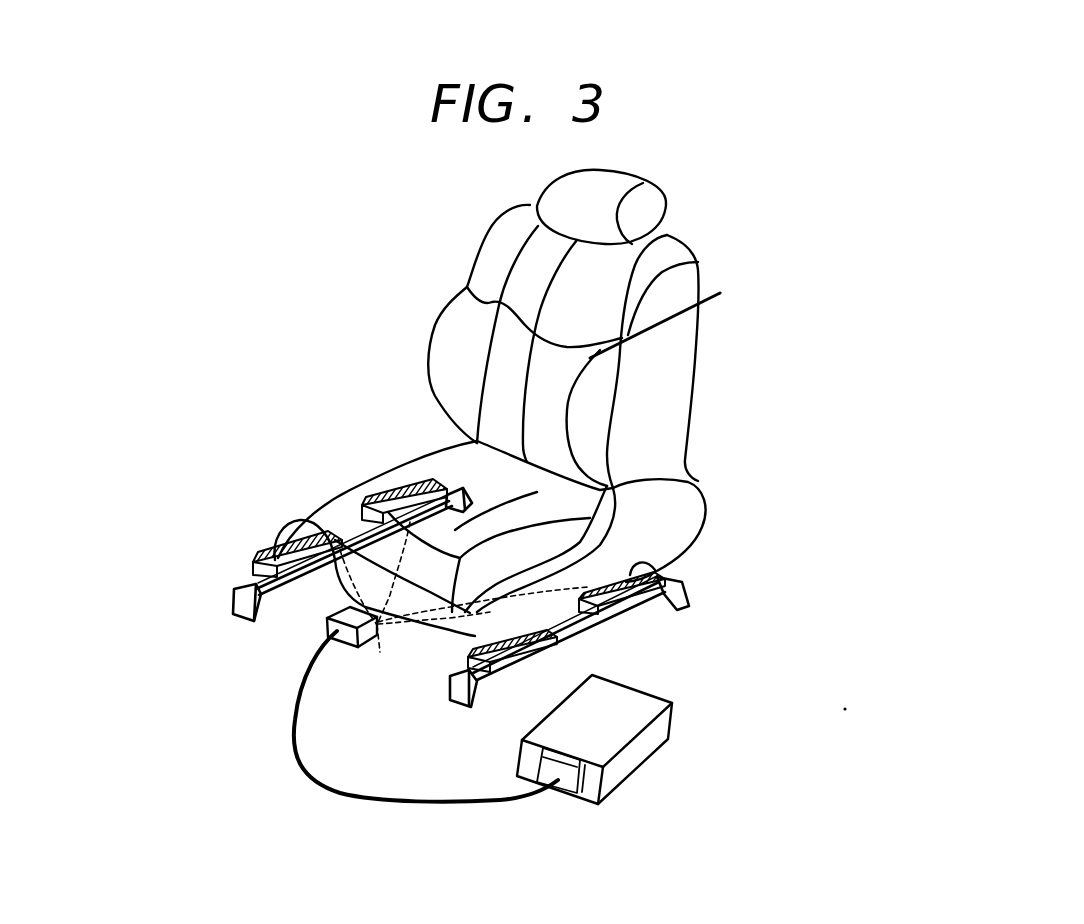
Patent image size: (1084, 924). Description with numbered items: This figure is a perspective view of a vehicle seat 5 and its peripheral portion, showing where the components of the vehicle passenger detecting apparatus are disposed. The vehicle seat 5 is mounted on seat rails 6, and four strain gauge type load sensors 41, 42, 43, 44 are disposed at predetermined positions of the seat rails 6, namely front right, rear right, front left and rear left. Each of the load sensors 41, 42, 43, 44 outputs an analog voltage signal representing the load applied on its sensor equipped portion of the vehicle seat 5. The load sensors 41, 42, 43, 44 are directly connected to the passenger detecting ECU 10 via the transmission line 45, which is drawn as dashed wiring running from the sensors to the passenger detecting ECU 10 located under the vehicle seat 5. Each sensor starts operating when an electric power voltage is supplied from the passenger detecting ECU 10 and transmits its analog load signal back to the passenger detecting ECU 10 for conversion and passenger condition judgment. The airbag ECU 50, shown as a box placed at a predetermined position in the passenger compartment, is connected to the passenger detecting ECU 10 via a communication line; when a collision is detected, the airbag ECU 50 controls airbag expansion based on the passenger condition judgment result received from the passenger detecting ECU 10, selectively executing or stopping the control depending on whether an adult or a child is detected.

The vehicle seat 5 is at (678, 302).
The seat rails 6 is at (252, 583).
The passenger detecting ECU 10 is at (347, 613).
The strain gauge type load sensor 41 is at (289, 550).
The strain gauge type load sensor 42 is at (412, 515).
The strain gauge type load sensor 43 is at (557, 636).
The strain gauge type load sensor 44 is at (622, 577).
The transmission line 45 is at (464, 617).
The airbag ECU 50 is at (612, 694).